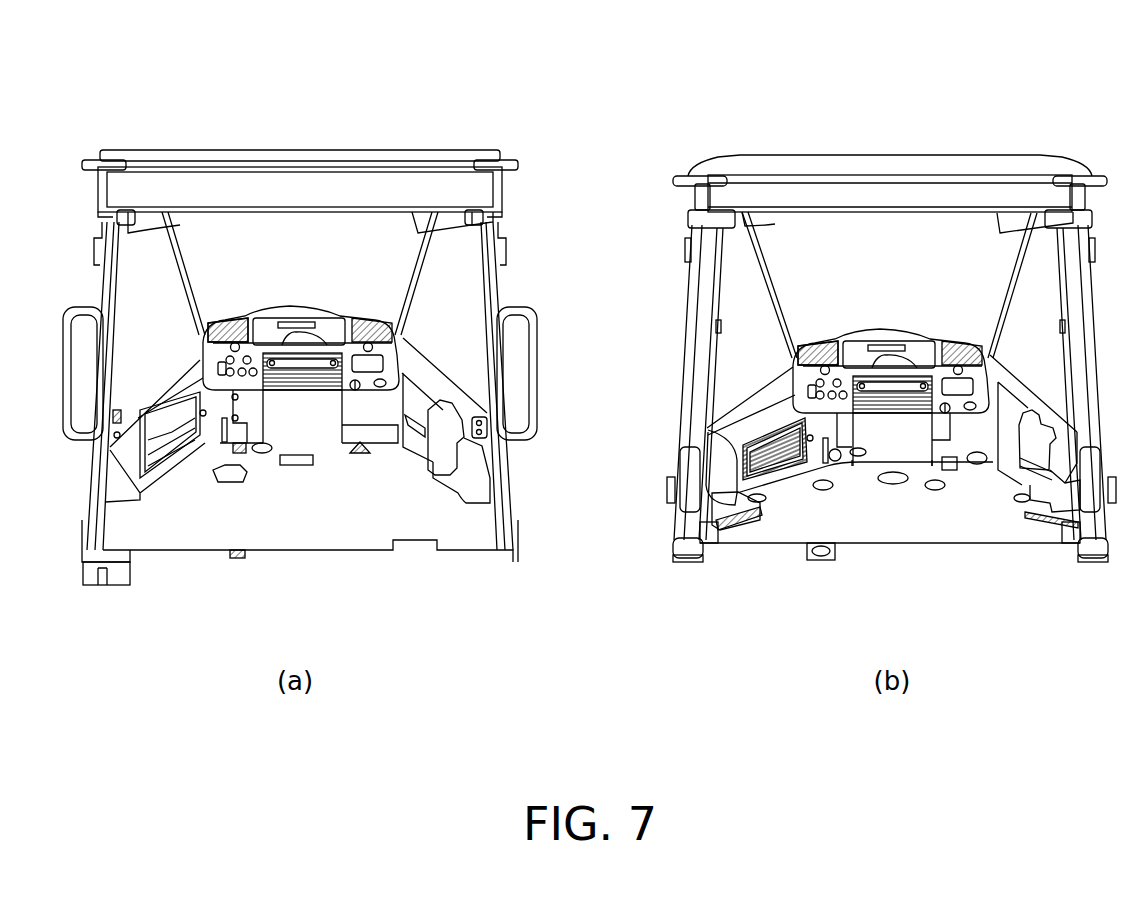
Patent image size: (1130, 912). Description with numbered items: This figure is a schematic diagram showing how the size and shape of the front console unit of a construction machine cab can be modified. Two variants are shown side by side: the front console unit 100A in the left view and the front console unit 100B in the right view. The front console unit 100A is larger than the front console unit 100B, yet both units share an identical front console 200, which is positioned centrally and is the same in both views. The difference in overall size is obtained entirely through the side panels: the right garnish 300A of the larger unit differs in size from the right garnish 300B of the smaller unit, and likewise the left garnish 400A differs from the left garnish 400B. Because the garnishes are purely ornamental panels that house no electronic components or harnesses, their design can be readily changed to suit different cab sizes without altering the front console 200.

The front console unit 100A is at (205, 77).
The front console unit 100B is at (812, 77).
The front console 200 is at (280, 306).
The right garnish 300A is at (437, 367).
The right garnish 300B is at (1030, 387).
The left garnish 400A is at (158, 377).
The left garnish 400B is at (759, 380).